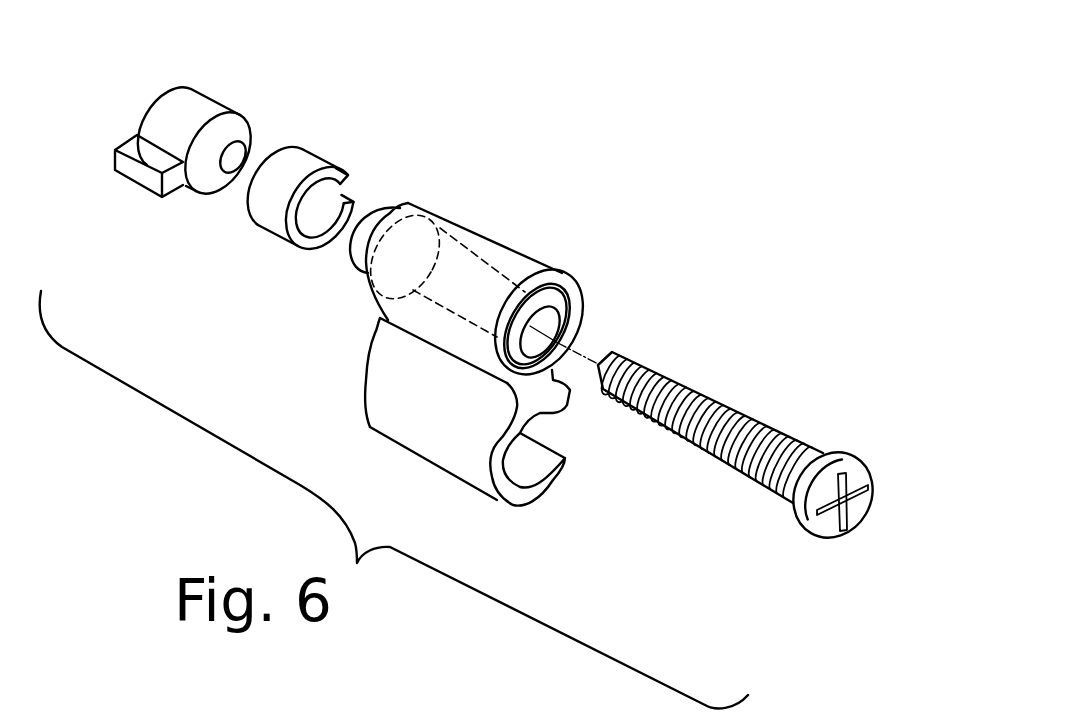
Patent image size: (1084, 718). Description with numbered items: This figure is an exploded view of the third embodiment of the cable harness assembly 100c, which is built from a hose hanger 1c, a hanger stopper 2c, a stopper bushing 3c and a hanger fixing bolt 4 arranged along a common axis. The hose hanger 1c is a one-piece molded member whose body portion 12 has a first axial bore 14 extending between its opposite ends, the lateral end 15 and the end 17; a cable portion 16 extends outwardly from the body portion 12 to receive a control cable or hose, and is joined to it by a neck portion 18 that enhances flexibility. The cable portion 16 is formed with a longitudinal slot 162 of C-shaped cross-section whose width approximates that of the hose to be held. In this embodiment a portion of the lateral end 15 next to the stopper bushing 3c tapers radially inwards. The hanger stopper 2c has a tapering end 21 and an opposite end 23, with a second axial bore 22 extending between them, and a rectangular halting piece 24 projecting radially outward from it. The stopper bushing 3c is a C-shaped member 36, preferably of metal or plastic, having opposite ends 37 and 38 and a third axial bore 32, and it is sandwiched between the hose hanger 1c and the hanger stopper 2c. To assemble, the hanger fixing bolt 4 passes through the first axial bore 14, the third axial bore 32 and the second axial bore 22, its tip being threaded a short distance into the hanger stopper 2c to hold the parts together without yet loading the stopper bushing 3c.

The cable harness assembly 100c is at (578, 142).
The hose hanger 1c is at (490, 223).
The hanger stopper 2c is at (207, 85).
The stopper bushing 3c is at (341, 173).
The hanger fixing bolt 4 is at (720, 397).
The body portion 12 is at (541, 257).
The first axial bore 14 is at (566, 320).
The lateral end 15 is at (361, 393).
The cable portion 16 is at (424, 434).
The end 17 is at (569, 282).
The neck portion 18 is at (568, 393).
The end 21 is at (238, 127).
The second axial bore 22 is at (258, 168).
The end 23 is at (150, 94).
The halting piece 24 is at (138, 189).
The third axial bore 32 is at (332, 254).
The C-shaped member 36 is at (339, 146).
The end 37 is at (308, 253).
The end 38 is at (250, 214).
The slot 162 is at (566, 448).